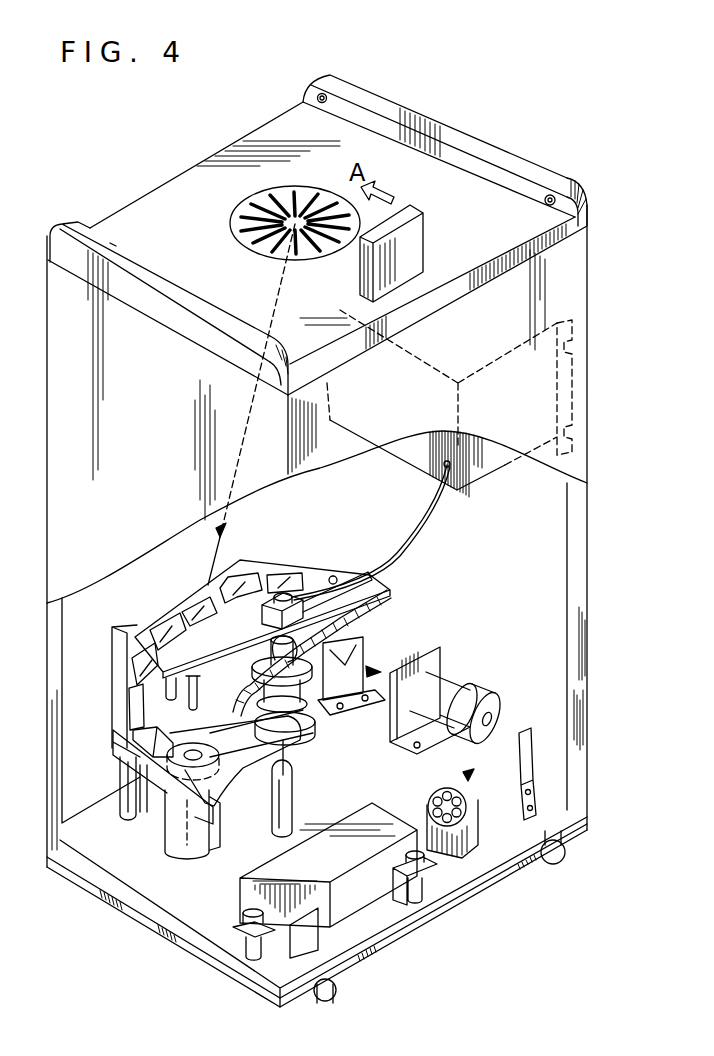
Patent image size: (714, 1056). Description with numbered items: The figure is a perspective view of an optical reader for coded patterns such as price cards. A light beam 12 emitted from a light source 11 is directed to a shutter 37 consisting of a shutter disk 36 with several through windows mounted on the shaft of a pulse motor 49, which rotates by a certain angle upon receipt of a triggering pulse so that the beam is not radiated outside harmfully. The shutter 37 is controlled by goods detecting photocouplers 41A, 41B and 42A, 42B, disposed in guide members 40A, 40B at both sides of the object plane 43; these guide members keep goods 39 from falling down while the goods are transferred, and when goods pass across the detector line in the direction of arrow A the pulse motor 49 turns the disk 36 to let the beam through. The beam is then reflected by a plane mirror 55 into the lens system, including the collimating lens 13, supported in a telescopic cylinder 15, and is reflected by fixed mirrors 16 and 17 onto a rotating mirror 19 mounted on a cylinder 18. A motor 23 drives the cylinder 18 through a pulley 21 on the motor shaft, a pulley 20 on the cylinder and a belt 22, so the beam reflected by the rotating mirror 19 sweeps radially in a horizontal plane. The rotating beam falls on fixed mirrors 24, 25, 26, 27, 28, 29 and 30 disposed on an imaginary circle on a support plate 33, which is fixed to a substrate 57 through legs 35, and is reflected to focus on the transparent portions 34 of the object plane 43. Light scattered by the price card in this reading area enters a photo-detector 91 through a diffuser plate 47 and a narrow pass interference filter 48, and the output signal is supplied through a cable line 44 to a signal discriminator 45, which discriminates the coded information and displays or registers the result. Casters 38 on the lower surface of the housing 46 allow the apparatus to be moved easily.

The light source 11 is at (367, 900).
The light beam 12 is at (421, 800).
The collimating lens 13 is at (489, 738).
The telescopic cylinder 15 is at (456, 690).
The fixed mirror 16 is at (343, 650).
The fixed mirror 17 is at (288, 788).
The cylinder 18 is at (267, 689).
The rotating mirror 19 is at (267, 657).
The pulley 20 is at (305, 718).
The pulley 21 is at (203, 746).
The belt 22 is at (262, 748).
The motor 23 is at (213, 826).
The fixed mirror 24 is at (278, 574).
The fixed mirror 25 is at (237, 577).
The fixed mirror 26 is at (197, 603).
The fixed mirror 27 is at (168, 620).
The fixed mirror 28 is at (140, 650).
The fixed mirror 29 is at (125, 705).
The fixed mirror 30 is at (120, 730).
The support plate 33 is at (123, 649).
The transparent portions 34 is at (270, 250).
The legs 35 is at (122, 777).
The shutter disk 36 is at (430, 857).
The shutter 37 is at (474, 812).
The casters 38 is at (565, 856).
The goods 39 is at (415, 254).
The guide member 40A is at (490, 150).
The guide member 40B is at (80, 232).
The goods detecting photocoupler 41A is at (567, 192).
The goods detecting photocoupler 41B is at (285, 345).
The goods detecting photocoupler 42A is at (310, 97).
The goods detecting photocoupler 42B is at (112, 245).
The object plane 43 is at (165, 197).
The cable line 44 is at (440, 508).
The signal discriminator 45 is at (547, 400).
The housing 46 is at (588, 826).
The diffuser plate 47 is at (286, 592).
The narrow pass interference filter 48 is at (283, 598).
The pulse motor 49 is at (468, 803).
The plane mirror 55 is at (522, 760).
The substrate 57 is at (187, 920).
The photo-detector 91 is at (310, 590).